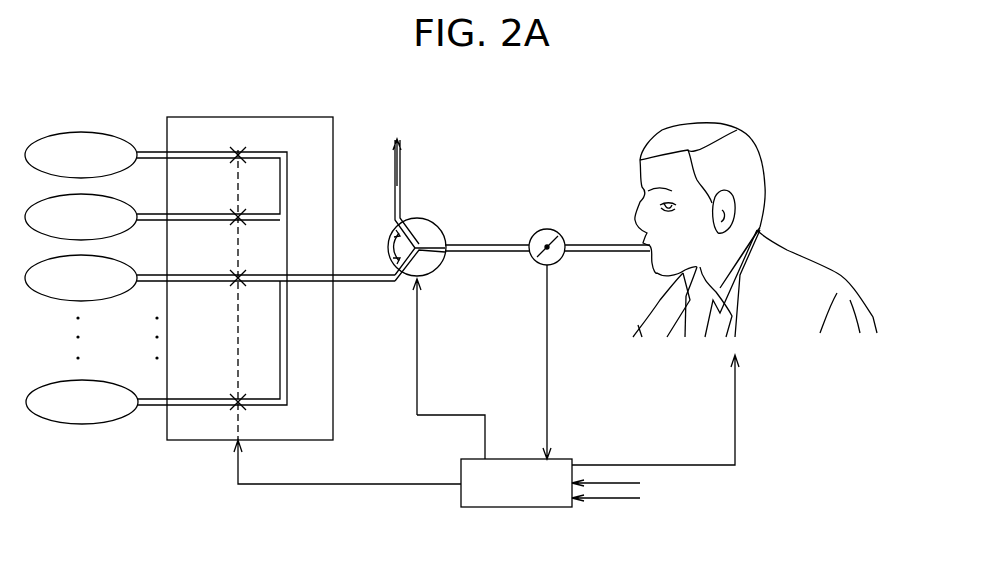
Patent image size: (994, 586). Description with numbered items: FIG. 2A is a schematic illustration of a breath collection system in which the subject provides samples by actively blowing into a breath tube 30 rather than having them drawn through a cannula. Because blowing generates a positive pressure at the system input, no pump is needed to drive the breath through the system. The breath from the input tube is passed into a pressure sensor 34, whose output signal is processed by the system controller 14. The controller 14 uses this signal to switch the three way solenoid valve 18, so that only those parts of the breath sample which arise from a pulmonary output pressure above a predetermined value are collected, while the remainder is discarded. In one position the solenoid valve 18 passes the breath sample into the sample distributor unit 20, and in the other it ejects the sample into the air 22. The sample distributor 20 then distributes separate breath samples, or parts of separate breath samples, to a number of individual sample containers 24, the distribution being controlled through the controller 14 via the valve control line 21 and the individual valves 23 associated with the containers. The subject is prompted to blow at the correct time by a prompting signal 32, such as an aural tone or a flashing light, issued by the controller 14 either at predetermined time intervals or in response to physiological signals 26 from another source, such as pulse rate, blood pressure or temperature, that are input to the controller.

The sample containers 24 is at (100, 133).
The sample distributor unit 20 is at (253, 117).
The valve 23 is at (242, 149).
The air 22 is at (397, 163).
The three way solenoid valve 18 is at (435, 226).
The breath tube 30 is at (612, 245).
The pressure sensor 34 is at (561, 259).
The system controller 14 is at (560, 459).
The valve control line 21 is at (350, 484).
The physiological signals 26 is at (640, 489).
The prompting signal 32 is at (736, 408).